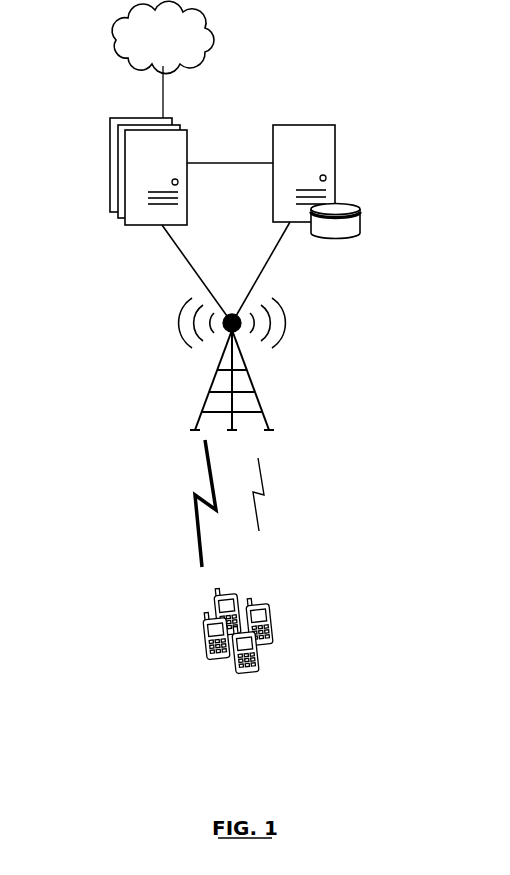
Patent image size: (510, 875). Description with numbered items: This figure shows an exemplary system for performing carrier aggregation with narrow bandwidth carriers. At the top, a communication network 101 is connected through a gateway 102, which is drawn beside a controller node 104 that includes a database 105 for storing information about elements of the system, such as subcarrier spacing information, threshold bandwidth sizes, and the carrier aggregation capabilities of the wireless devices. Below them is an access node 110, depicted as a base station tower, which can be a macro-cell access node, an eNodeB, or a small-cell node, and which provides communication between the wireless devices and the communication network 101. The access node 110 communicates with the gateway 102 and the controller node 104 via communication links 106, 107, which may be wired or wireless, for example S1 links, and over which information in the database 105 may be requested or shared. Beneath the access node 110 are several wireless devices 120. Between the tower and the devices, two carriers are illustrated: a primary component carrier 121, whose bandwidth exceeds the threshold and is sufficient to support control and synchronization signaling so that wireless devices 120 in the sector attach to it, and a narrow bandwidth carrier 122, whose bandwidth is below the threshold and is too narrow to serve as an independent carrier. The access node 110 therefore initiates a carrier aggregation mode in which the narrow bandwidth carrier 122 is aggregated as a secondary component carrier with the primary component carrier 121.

The communication network 101 is at (149, 43).
The gateway 102 is at (128, 118).
The controller node 104 is at (335, 125).
The database 105 is at (358, 210).
The communication link 106 is at (268, 262).
The communication link 107 is at (178, 250).
The access node 110 is at (218, 384).
The wireless devices 120 is at (272, 678).
The primary component carrier 121 is at (200, 535).
The narrow bandwidth carrier 122 is at (262, 467).